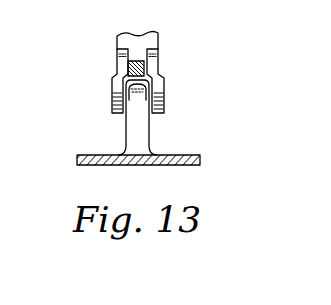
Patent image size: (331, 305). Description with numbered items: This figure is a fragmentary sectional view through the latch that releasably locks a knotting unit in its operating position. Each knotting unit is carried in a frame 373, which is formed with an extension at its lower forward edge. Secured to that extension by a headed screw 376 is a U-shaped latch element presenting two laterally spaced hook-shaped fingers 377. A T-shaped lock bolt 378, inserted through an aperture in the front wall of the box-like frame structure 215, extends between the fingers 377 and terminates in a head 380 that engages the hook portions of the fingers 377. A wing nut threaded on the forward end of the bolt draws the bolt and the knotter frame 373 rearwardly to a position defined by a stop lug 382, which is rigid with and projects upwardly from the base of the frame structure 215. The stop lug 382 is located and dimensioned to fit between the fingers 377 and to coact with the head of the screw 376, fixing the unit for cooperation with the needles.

The frame structure 215 is at (83, 156).
The frame 373 is at (157, 41).
The headed screw 376 is at (133, 105).
The hook-shaped fingers 377 is at (114, 89).
The lock bolt 378 is at (123, 64).
The head 380 is at (159, 69).
The stop lug 382 is at (141, 141).